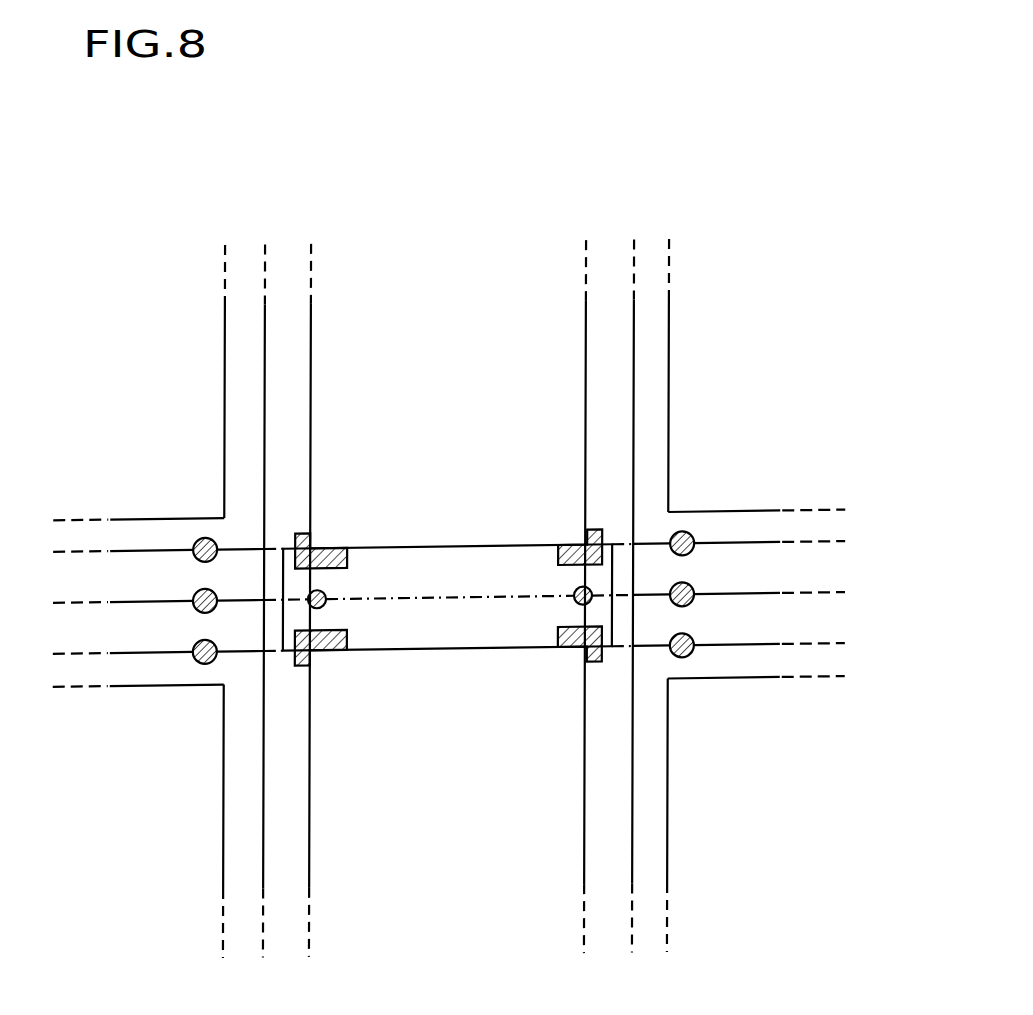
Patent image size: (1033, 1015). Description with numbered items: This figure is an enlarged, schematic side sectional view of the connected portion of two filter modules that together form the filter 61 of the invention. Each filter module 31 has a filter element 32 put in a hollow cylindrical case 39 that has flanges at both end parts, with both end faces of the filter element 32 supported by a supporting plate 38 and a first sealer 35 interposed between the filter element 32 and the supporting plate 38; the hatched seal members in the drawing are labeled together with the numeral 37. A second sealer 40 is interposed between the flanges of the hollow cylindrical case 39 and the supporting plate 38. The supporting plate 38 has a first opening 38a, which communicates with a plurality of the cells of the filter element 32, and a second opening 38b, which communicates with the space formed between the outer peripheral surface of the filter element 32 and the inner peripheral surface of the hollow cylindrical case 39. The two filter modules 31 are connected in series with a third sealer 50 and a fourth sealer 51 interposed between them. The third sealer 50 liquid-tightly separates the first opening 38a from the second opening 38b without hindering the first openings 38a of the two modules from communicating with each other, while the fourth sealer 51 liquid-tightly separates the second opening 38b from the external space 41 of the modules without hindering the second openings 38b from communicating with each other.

The filter module 31 is at (690, 292).
The filter element 32 is at (553, 363).
The first sealer 35 is at (298, 532).
The elastic member 37 is at (452, 591).
The supporting plate 38 is at (125, 573).
The first opening 38a is at (448, 566).
The second opening 38b is at (275, 562).
The hollow cylindrical case 39 is at (238, 350).
The second sealer 40 is at (197, 539).
The external space 41 is at (97, 357).
The third sealer 50 is at (318, 588).
The fourth sealer 51 is at (194, 589).
The filter 61 is at (469, 510).